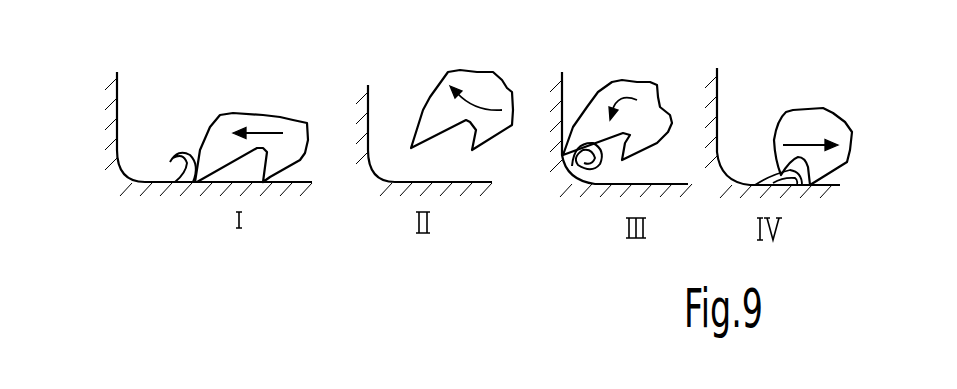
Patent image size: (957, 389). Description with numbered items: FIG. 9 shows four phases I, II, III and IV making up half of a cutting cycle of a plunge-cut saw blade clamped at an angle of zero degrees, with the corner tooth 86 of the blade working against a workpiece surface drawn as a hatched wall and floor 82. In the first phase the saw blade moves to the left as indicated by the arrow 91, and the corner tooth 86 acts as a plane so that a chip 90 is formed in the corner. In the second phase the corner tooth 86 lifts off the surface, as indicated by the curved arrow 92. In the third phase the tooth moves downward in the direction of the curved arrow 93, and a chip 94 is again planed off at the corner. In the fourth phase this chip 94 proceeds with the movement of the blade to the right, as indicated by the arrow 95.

The wall of dust collecting chamber 82 is at (110, 125).
The corner tooth 86 is at (216, 147).
The chip 90 is at (176, 148).
The arrow 91 is at (258, 130).
The arrow 92 is at (468, 100).
The arrow 93 is at (637, 100).
The chip 94 is at (588, 167).
The arrow 95 is at (807, 143).